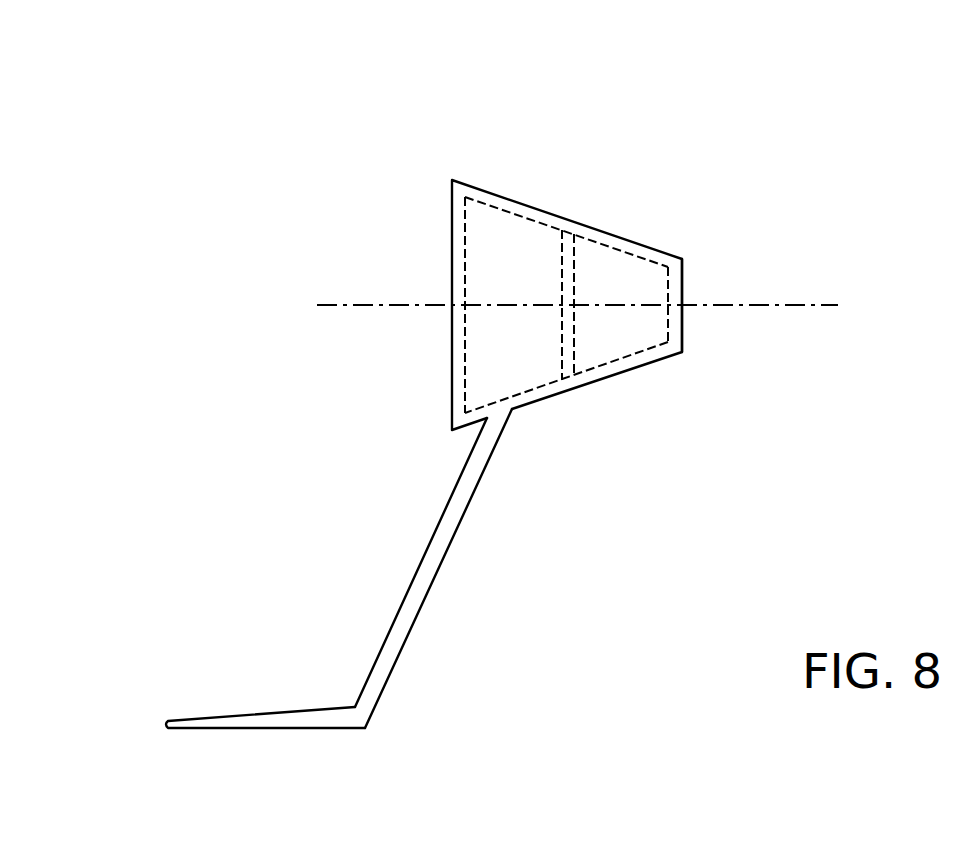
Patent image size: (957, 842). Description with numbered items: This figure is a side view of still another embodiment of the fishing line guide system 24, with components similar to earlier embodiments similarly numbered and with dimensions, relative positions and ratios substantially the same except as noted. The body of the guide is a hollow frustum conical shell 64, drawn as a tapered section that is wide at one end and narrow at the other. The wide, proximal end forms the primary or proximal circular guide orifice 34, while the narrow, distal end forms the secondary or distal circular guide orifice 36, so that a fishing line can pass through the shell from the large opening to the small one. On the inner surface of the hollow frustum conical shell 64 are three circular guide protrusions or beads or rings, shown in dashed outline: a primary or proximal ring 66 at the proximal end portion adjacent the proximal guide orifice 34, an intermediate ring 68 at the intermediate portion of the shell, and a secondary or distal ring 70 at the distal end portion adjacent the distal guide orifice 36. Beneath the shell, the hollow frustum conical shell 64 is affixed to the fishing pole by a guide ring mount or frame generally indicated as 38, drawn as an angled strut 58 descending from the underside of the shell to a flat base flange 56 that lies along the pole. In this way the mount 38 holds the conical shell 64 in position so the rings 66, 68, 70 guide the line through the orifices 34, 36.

The fishing line guide system 24 is at (273, 173).
The primary or proximal circular guide orifice 34 is at (450, 258).
The secondary or distal circular guide orifice 36 is at (683, 287).
The guide ring mount or frame 38 is at (422, 568).
The base flange 56 is at (393, 625).
The strut 58 is at (465, 465).
The hollow frustum conical shell 64 is at (580, 225).
The primary or proximal circular guide protrusion or bead or ring 66 is at (460, 240).
The intermediate circular guide protrusion or bead or ring 68 is at (562, 258).
The secondary or distal circular guide protrusion or bead or ring 70 is at (675, 337).